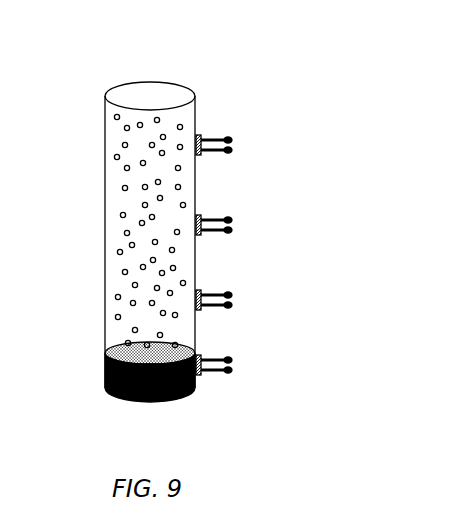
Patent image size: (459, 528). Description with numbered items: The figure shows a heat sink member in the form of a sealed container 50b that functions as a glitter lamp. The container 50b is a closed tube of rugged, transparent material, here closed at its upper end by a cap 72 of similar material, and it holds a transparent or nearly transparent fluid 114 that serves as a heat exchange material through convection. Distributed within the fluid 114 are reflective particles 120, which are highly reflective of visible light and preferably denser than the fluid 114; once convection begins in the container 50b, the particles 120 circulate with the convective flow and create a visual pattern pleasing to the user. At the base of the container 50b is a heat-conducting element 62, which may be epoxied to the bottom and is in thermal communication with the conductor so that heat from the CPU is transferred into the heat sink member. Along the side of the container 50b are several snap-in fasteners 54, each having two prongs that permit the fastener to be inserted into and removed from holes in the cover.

The sealed container 50b is at (106, 285).
The transparent fluid 114 is at (123, 198).
The cap 72 is at (147, 90).
The reflective particles 120 is at (181, 144).
The heat-conducting element 62 is at (106, 372).
The snap-in fastener 54 is at (240, 296).